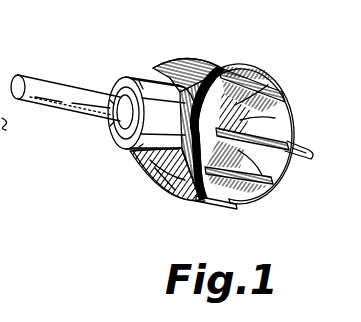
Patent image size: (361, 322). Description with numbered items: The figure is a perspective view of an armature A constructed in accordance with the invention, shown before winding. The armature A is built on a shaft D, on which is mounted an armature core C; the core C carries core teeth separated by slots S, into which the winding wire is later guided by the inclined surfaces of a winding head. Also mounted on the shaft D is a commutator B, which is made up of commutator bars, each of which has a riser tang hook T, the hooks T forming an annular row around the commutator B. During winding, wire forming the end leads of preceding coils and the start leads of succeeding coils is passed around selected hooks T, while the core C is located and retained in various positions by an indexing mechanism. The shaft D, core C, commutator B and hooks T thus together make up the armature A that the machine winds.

The shaft D is at (79, 86).
The commutator B is at (136, 80).
The riser tang hook T is at (171, 68).
The armature A is at (254, 118).
The armature core C is at (285, 89).
The slots S is at (285, 107).